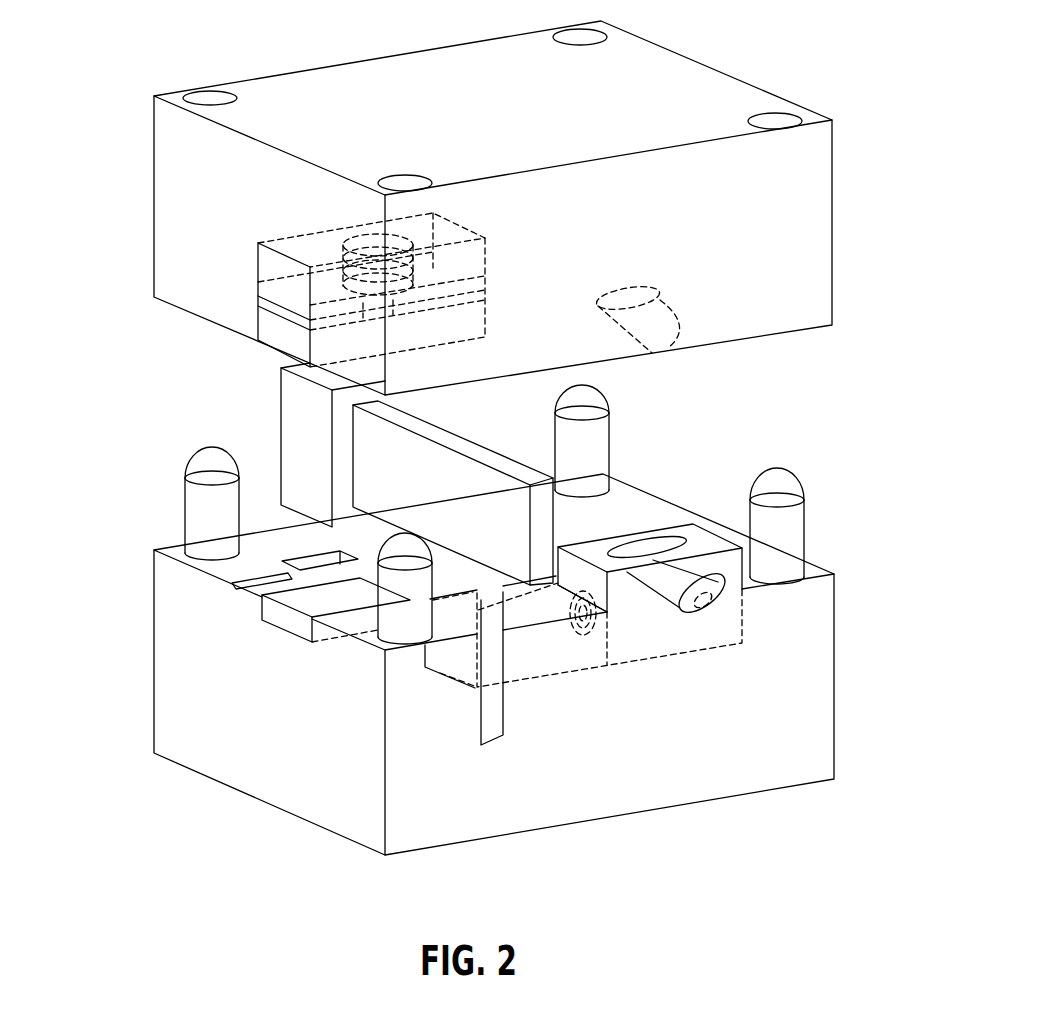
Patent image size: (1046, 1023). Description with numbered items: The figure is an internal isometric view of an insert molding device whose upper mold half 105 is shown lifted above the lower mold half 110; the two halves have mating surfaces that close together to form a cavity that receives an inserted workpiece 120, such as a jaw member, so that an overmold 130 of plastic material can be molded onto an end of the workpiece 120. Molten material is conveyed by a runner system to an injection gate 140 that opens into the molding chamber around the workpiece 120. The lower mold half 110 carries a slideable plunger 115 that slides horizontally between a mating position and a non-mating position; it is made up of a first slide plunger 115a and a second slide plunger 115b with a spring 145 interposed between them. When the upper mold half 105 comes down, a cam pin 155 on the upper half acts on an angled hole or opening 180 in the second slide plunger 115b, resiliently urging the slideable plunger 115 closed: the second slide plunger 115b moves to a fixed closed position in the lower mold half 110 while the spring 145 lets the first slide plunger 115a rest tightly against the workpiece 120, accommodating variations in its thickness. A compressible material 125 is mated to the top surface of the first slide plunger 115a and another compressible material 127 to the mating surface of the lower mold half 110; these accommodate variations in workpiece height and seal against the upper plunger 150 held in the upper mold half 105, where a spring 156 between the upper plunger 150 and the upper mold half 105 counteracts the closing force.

The upper mold half 105 is at (705, 62).
The lower mold half 110 is at (827, 562).
The slideable plunger 115 is at (725, 535).
The first slide plunger 115a is at (550, 598).
The second slide plunger 115b is at (733, 615).
The inserted workpiece 120 is at (375, 477).
The compressible material 125 is at (522, 668).
The compressible material 127 is at (278, 617).
The overmold 130 is at (297, 422).
The injection gate 140 is at (233, 590).
The spring 145 is at (605, 630).
The upper plunger 150 is at (258, 311).
The cam pin 155 is at (680, 343).
The spring 156 is at (343, 232).
The angled hole or opening 180 is at (643, 545).